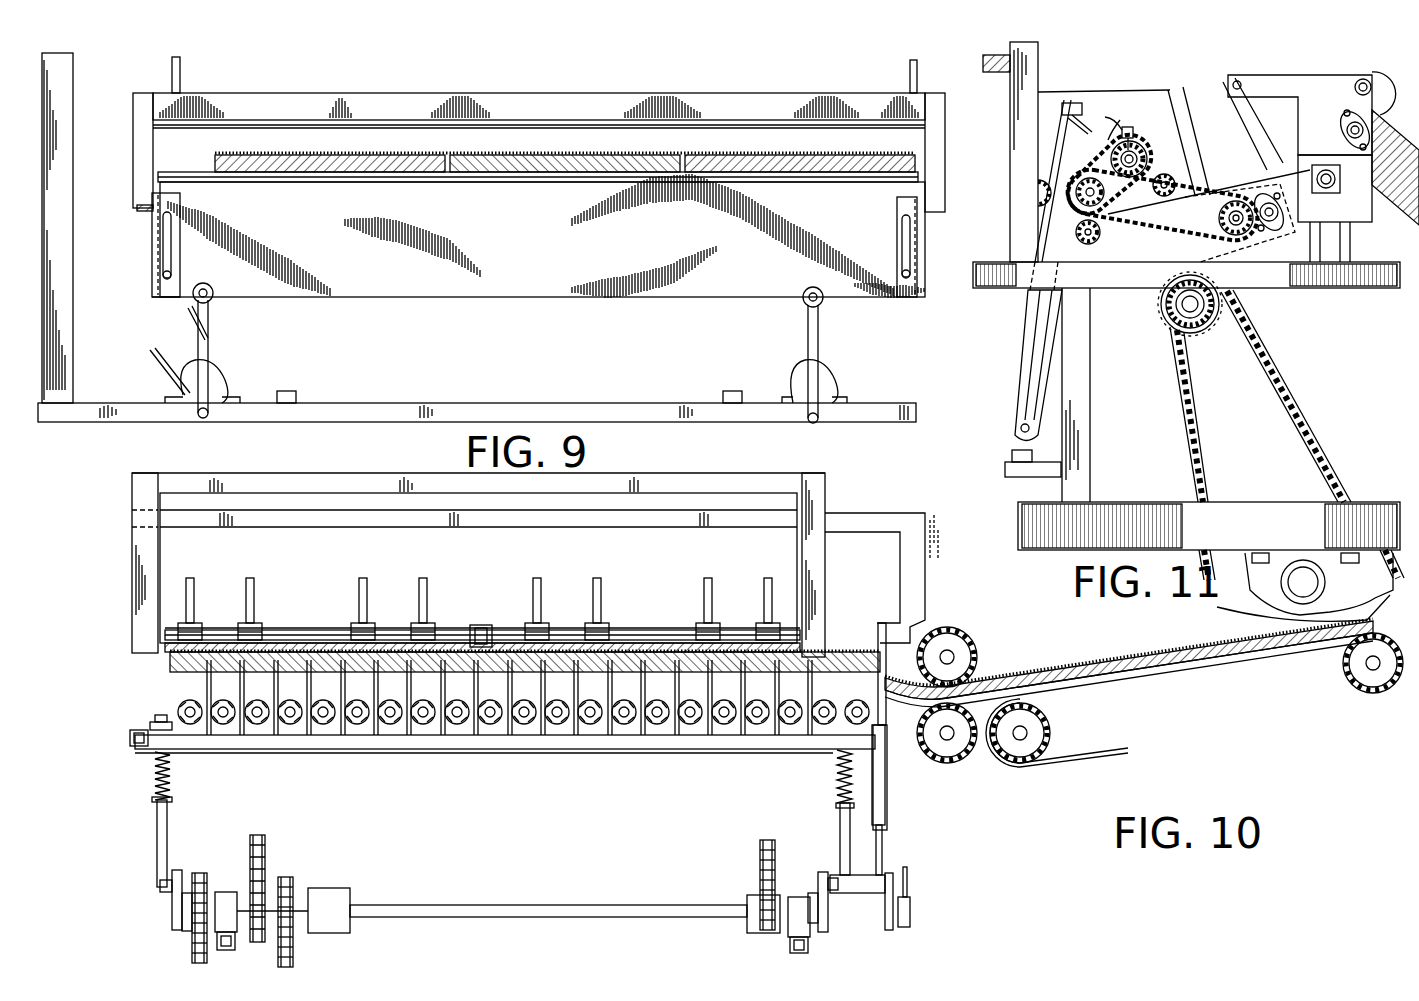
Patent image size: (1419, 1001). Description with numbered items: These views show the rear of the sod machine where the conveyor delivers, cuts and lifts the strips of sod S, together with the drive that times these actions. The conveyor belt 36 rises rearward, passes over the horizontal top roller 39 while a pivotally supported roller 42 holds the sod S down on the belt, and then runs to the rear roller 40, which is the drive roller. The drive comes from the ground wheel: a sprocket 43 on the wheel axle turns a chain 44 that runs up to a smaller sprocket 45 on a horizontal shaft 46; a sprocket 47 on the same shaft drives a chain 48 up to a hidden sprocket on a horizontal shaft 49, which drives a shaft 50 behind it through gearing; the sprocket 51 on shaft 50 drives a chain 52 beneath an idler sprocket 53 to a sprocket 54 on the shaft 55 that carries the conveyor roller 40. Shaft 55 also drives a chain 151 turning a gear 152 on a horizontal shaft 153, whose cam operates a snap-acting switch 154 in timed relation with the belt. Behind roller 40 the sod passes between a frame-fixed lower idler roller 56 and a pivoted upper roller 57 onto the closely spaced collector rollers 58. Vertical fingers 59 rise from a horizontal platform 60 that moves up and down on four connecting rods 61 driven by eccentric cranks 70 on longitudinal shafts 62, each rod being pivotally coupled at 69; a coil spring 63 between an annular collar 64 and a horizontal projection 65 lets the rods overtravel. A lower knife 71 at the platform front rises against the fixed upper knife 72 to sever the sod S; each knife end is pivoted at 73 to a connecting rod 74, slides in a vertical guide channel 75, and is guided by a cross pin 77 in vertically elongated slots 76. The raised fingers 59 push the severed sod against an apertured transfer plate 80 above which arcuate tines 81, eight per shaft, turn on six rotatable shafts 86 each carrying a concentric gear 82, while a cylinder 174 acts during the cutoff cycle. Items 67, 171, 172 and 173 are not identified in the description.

In FIG. 10, the conveyor belt 36 is at (1172, 670).
In FIG. 10, the top roller 39 is at (1345, 672).
In FIG. 10, the rear roller 40 is at (1050, 724).
In FIG. 11, the pivotally supported roller 42 is at (1368, 78).
In FIG. 11, the sprocket 43 is at (1373, 592).
In FIG. 11, the chain 44 is at (1318, 446).
In FIG. 11, the sprocket 45 is at (1208, 322).
In FIG. 11, the horizontal shaft 46 is at (1191, 318).
In FIG. 11, the sprocket 47 is at (1160, 308).
In FIG. 11, the chain 48 is at (1235, 298).
In FIG. 11, the horizontal shaft 49 is at (1275, 222).
In FIG. 11, the shaft 50 is at (1200, 232).
In FIG. 11, the sprocket 51 is at (1212, 214).
In FIG. 11, the chain 52 is at (1190, 187).
In FIG. 11, the idler sprocket 53 is at (1163, 174).
In FIG. 11, the sprocket 54 is at (1125, 192).
In FIG. 11, the shaft 55 is at (1100, 198).
In FIG. 10, the lower idler roller 56 is at (955, 763).
In FIG. 10, the upper roller 57 is at (948, 628).
In FIG. 9, the collector rollers 58 is at (193, 178).
In FIG. 10, the collector rollers 58 is at (298, 704).
In FIG. 10, the vertical fingers 59 is at (240, 698).
In FIG. 10, the horizontal platform 60 is at (518, 750).
In FIG. 10, the connecting rods 61 is at (168, 820).
In FIG. 10, the horizontal shafts 62 is at (520, 904).
In FIG. 10, the coil spring 63 is at (172, 768).
In FIG. 10, the annular collar 64 is at (155, 798).
In FIG. 10, the horizontal projection 65 is at (152, 727).
In FIG. 10, the sprocket 67 is at (294, 946).
In FIG. 9, the pivotal coupling 69 is at (208, 418).
In FIG. 10, the pivotal coupling 69 is at (160, 885).
In FIG. 9, the eccentric crank 70 is at (225, 396).
In FIG. 10, the eccentric crank 70 is at (172, 903).
In FIG. 9, the lower knife 71 is at (550, 270).
In FIG. 10, the lower knife 71 is at (880, 705).
In FIG. 9, the fixed upper knife 72 is at (575, 100).
In FIG. 10, the fixed upper knife 72 is at (880, 635).
In FIG. 9, the pivotal connection 73 is at (212, 298).
In FIG. 9, the connecting rod 74 is at (212, 330).
In FIG. 10, the connecting rod 74 is at (884, 848).
In FIG. 9, the vertical guide channel 75 is at (150, 285).
In FIG. 10, the vertical guide channel 75 is at (884, 808).
In FIG. 9, the vertically elongated slots 76 is at (166, 238).
In FIG. 9, the cross pin 77 is at (165, 273).
In FIG. 10, the apertured transfer plate 80 is at (288, 640).
In FIG. 10, the arcuate tines 81 is at (246, 592).
In FIG. 10, the concentric gear 82 is at (482, 625).
In FIG. 10, the rotatable shafts 86 is at (630, 640).
In FIG. 11, the chain 151 is at (1110, 160).
In FIG. 11, the gear 152 is at (1136, 147).
In FIG. 11, the horizontal shaft 153 is at (1134, 160).
In FIG. 11, the snap-acting switch 154 is at (1130, 127).
In FIG. 11, the cylinder 171 is at (1024, 372).
In FIG. 11, the cylinder pivot 172 is at (1018, 434).
In FIG. 11, the piston rod 173 is at (1036, 348).
In FIG. 11, the cylinder 174 is at (1062, 125).
In FIG. 9, the sod S is at (376, 160).
In FIG. 10, the sod S is at (172, 660).